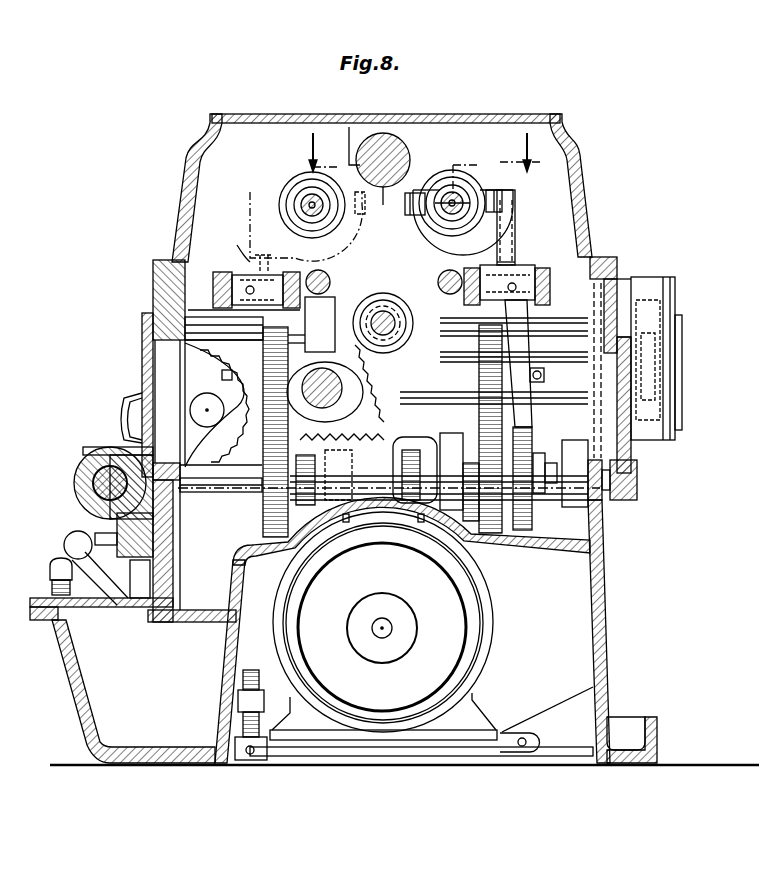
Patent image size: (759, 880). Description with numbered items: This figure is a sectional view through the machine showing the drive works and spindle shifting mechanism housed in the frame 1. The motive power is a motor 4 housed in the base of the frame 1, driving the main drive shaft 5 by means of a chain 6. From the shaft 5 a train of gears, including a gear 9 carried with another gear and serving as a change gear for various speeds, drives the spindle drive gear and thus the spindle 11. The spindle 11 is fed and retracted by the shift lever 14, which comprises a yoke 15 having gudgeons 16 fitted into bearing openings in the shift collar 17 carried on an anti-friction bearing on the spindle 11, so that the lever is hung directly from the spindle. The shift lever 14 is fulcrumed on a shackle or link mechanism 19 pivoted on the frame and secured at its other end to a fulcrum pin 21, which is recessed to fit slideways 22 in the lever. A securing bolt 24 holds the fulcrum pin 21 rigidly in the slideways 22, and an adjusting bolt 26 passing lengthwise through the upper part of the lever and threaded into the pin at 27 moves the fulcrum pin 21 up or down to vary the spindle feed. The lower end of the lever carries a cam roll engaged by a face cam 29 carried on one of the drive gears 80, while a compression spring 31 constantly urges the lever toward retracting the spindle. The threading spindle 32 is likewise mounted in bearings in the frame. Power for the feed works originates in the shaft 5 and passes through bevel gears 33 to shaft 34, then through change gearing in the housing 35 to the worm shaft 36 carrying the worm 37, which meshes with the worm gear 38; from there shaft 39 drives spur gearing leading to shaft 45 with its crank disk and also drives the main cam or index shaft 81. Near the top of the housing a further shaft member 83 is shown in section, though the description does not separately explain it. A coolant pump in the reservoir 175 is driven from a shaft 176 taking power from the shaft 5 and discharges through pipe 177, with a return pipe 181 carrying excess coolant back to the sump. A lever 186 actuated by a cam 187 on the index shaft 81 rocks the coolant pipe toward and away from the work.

The frame 1 is at (604, 568).
The motor 4 is at (478, 630).
The shaft 5 is at (383, 300).
The chain 6 is at (356, 516).
The gear 9 is at (417, 154).
The spindle 11 is at (458, 198).
The shift lever 14 is at (528, 234).
The yoke 15 is at (338, 251).
The gudgeons 16 is at (431, 190).
The shift collar 17 is at (296, 193).
The shackle or link mechanism 19 is at (213, 291).
The fulcrum pin 21 is at (240, 270).
The slideways 22 is at (474, 306).
The bolt 24 is at (516, 284).
The adjusting bolt 26 is at (505, 219).
The threaded connection of adjusting bolt 27 is at (508, 262).
The face cam 29 is at (532, 441).
The compression spring 31 is at (222, 378).
The threading spindle 32 is at (320, 200).
The bevel gears 33 is at (392, 300).
The shaft 34 is at (622, 284).
The housing 35 is at (655, 311).
The worm shaft 36 is at (222, 492).
The worm 37 is at (290, 556).
The worm gear 38 is at (385, 386).
The shaft 39 is at (374, 355).
The shaft 45 is at (78, 482).
The drive gears 80 is at (263, 527).
The main cam or index shaft 81 is at (203, 420).
The shaft 83 is at (382, 164).
The reservoir 175 is at (122, 680).
The shaft 176 is at (153, 300).
The pipe 177 is at (95, 538).
The return pipe 181 is at (48, 576).
The lever 186 is at (122, 428).
The cam 187 is at (140, 392).